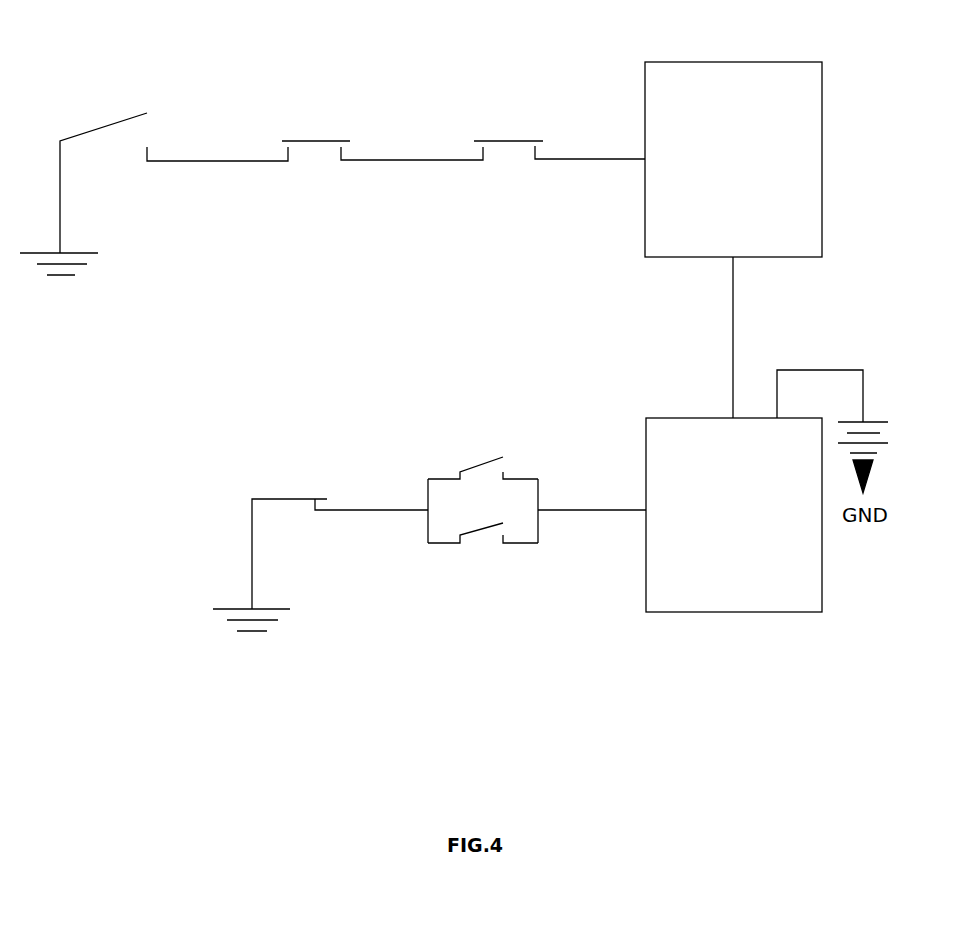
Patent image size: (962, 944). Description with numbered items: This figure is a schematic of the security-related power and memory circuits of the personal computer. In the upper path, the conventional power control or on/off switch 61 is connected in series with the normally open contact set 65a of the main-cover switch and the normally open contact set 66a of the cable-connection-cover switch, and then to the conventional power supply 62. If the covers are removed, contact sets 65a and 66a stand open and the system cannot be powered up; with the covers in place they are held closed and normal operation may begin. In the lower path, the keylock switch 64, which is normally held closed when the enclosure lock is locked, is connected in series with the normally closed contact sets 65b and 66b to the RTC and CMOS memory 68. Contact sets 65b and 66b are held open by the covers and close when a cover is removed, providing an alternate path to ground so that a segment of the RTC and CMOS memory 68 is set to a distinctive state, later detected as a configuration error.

The power control switch 61 is at (112, 123).
The power supply 62 is at (675, 62).
The keylock switch 64 is at (303, 499).
The normally open contact set 65a is at (318, 141).
The normally closed contact set 65b is at (483, 465).
The normally open contact set 66a is at (510, 141).
The normally closed contact set 66b is at (470, 532).
The RTC and CMOS memory 68 is at (677, 418).